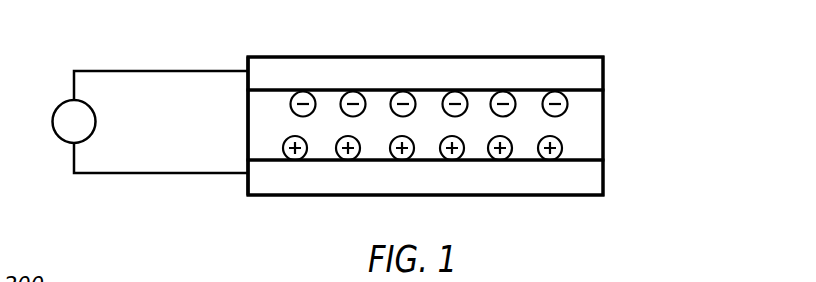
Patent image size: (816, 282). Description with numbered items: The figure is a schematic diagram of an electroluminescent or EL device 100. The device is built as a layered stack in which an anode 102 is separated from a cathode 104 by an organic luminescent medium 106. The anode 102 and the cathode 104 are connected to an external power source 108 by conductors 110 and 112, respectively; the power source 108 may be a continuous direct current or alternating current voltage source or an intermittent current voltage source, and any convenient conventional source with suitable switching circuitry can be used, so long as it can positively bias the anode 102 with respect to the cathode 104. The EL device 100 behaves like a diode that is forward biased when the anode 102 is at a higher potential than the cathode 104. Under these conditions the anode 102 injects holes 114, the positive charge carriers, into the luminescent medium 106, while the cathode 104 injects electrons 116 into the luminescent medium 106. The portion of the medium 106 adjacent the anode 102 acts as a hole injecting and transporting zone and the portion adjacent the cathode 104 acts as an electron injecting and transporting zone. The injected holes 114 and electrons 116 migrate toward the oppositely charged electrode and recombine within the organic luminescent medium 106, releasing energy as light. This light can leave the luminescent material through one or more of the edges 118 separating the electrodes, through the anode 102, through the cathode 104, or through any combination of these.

The EL device 100 is at (672, 94).
The anode 102 is at (605, 177).
The cathode 104 is at (606, 78).
The organic luminescent medium 106 is at (248, 124).
The external power source 108 is at (96, 119).
The conductor 110 is at (193, 173).
The conductor 112 is at (148, 71).
The holes 114 is at (490, 152).
The electrons 116 is at (440, 96).
The edges 118 is at (605, 130).